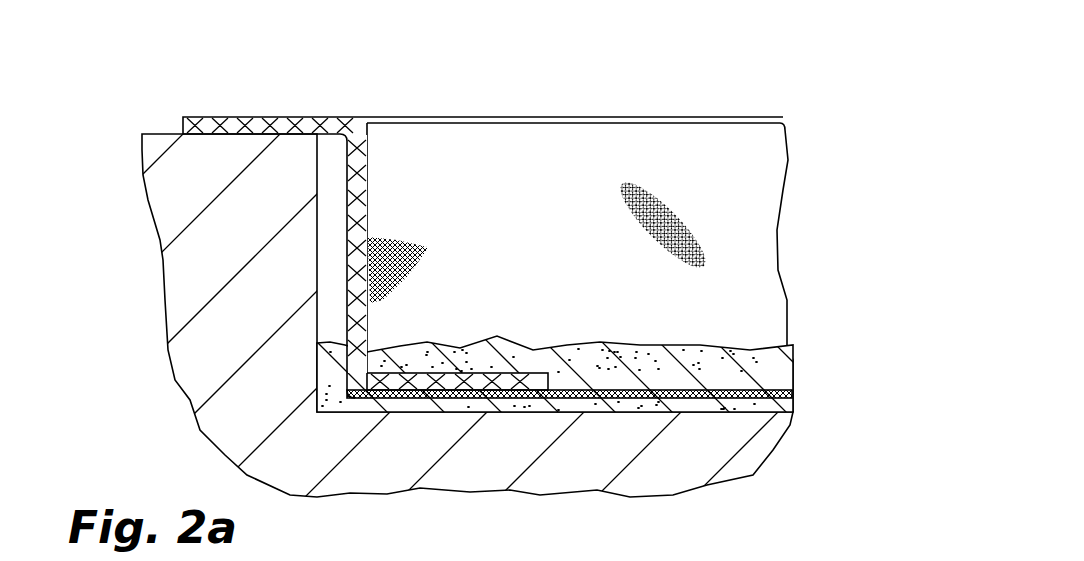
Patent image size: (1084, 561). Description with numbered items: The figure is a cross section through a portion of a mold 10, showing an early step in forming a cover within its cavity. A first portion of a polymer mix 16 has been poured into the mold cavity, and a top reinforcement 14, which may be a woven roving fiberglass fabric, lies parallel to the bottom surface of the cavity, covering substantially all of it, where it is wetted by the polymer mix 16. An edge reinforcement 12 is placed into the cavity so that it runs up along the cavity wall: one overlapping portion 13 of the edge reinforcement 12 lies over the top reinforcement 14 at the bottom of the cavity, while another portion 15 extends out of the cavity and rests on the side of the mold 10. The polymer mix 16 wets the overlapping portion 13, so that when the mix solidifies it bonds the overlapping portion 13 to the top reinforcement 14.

The mold 10 is at (156, 128).
The edge reinforcement 12 is at (348, 184).
The overlapping portion of the edge reinforcement 13 is at (470, 380).
The top reinforcement 14 is at (595, 398).
The portion of the edge reinforcement extending out of the mold cavity 15 is at (257, 108).
The first portion of polymer mix 16 is at (583, 340).